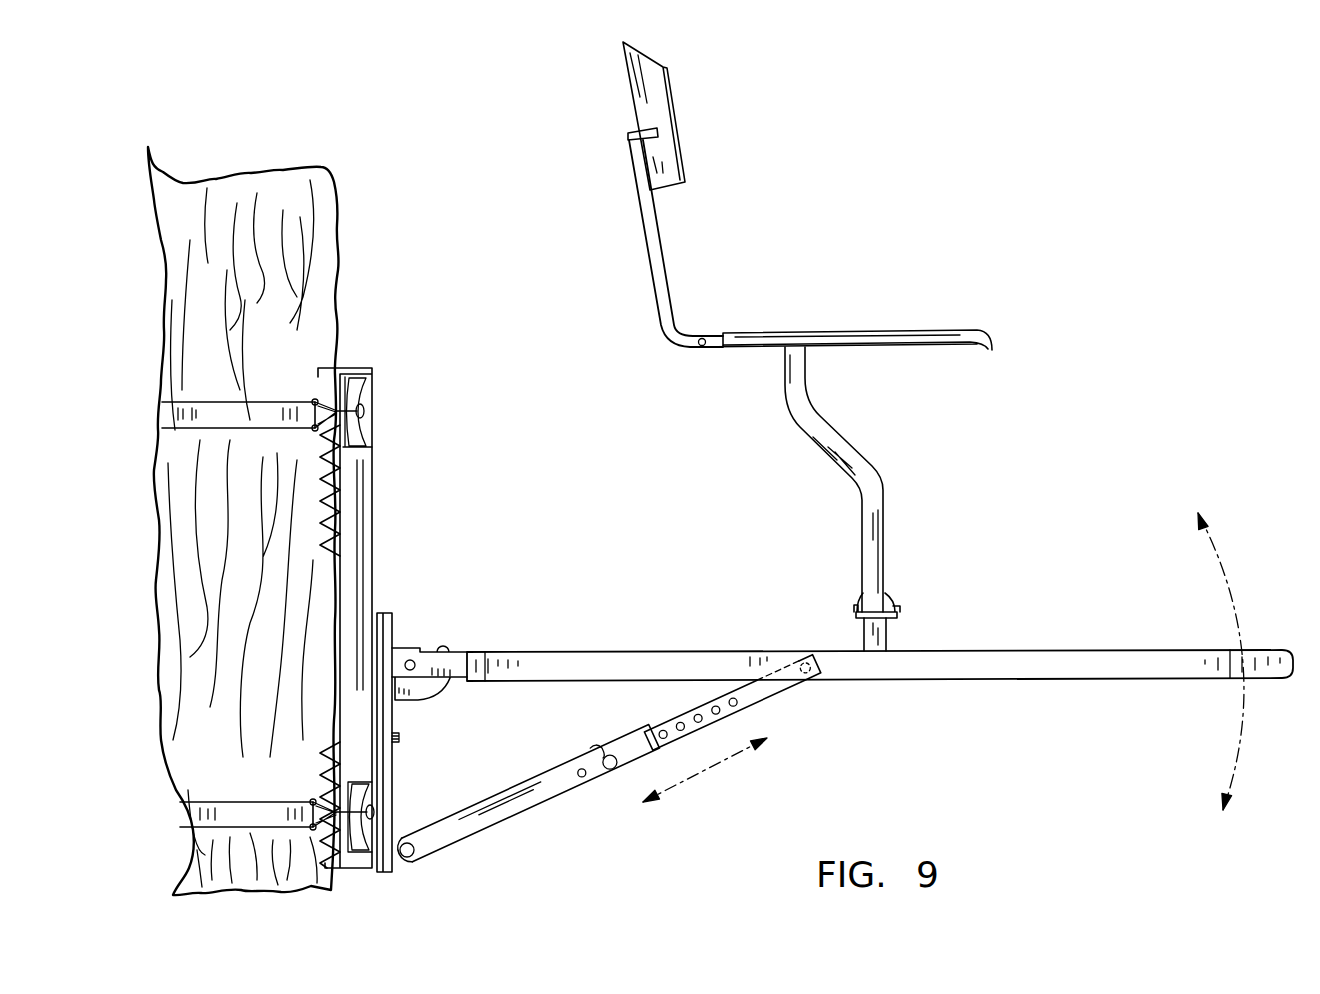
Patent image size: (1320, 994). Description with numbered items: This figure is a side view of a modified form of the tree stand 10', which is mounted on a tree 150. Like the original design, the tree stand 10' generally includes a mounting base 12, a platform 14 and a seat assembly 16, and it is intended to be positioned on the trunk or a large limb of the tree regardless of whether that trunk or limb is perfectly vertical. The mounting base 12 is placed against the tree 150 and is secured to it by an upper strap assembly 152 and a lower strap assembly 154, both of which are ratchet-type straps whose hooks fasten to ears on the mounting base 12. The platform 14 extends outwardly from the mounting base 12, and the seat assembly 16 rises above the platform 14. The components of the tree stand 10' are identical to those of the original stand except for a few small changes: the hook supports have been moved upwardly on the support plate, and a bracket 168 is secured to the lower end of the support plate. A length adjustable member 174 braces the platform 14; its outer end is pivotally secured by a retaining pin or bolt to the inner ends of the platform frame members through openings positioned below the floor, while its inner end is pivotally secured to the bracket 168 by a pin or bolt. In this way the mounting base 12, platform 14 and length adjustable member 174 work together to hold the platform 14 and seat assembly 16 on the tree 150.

The tree 150 is at (297, 192).
The upper strap assembly 152 is at (258, 412).
The lower strap assembly 154 is at (235, 807).
The mounting base 12 is at (392, 562).
The tree stand 10' is at (700, 463).
The platform 14 is at (1033, 638).
The seat assembly 16 is at (835, 297).
The bracket 168 is at (420, 853).
The length adjustable member 174 is at (537, 817).